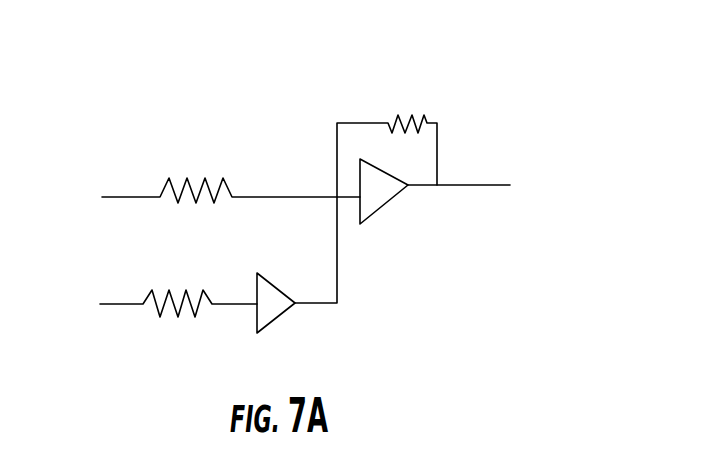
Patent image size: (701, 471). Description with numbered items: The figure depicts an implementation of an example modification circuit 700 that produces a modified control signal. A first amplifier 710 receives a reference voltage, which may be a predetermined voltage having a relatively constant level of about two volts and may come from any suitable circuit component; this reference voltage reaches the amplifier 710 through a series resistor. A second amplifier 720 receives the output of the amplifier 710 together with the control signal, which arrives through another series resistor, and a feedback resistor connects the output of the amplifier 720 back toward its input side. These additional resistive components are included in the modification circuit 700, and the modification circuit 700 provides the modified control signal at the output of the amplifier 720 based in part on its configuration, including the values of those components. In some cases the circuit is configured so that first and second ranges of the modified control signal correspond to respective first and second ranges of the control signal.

The modification circuit 700 is at (163, 72).
The amplifier 710 is at (287, 342).
The amplifier 720 is at (370, 212).